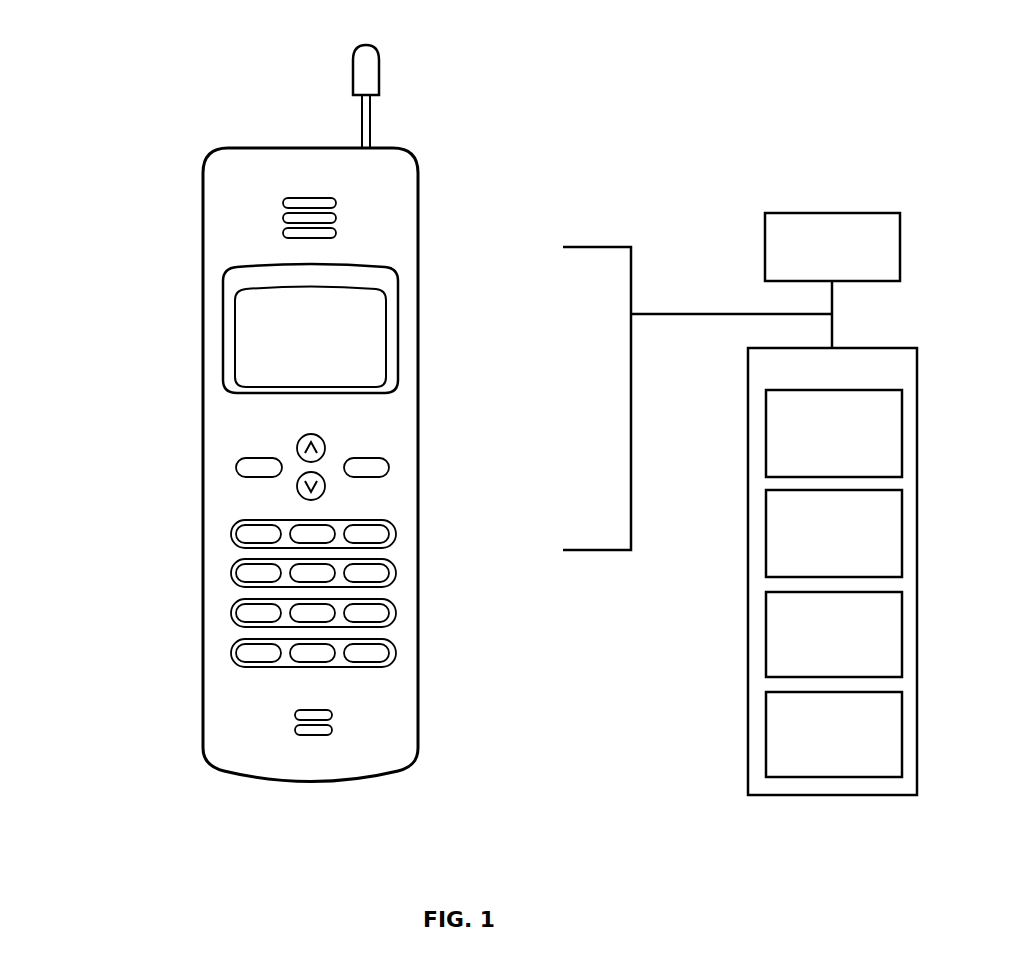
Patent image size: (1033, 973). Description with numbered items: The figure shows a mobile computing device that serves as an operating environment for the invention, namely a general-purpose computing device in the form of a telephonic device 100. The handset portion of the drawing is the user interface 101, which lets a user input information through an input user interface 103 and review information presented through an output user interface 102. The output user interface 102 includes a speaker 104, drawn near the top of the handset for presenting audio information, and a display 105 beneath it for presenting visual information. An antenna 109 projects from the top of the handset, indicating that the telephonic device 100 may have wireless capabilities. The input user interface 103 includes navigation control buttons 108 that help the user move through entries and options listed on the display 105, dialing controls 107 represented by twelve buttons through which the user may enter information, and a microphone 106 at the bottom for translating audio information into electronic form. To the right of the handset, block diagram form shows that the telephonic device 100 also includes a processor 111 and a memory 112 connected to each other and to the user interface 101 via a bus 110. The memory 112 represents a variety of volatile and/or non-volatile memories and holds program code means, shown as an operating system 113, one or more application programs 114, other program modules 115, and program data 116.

The telephonic device 100 is at (668, 122).
The user interface 101 is at (205, 787).
The output user interface 102 is at (430, 392).
The input user interface 103 is at (430, 687).
The speaker 104 is at (193, 213).
The display 105 is at (193, 342).
The microphone 106 is at (193, 722).
The dialing controls 107 is at (200, 668).
The navigation control buttons 108 is at (193, 460).
The antenna 109 is at (398, 108).
The bus 110 is at (665, 313).
The processor 111 is at (818, 272).
The memory 112 is at (885, 380).
The operating system 113 is at (818, 468).
The application programs 114 is at (818, 568).
The program modules 115 is at (818, 669).
The program data 116 is at (818, 770).